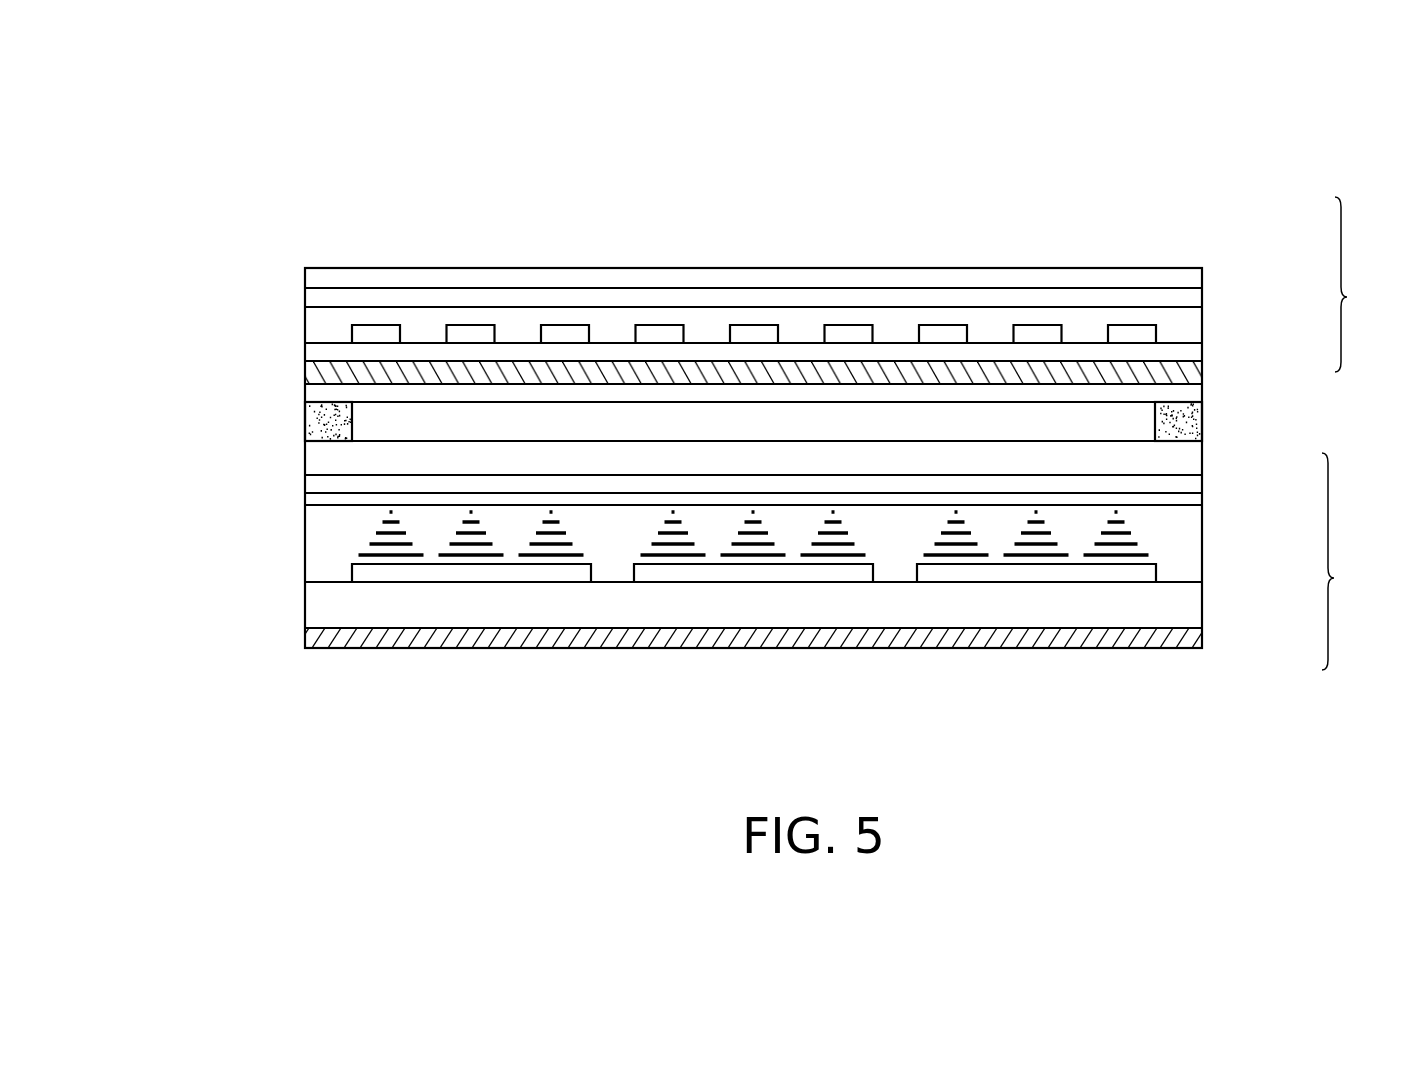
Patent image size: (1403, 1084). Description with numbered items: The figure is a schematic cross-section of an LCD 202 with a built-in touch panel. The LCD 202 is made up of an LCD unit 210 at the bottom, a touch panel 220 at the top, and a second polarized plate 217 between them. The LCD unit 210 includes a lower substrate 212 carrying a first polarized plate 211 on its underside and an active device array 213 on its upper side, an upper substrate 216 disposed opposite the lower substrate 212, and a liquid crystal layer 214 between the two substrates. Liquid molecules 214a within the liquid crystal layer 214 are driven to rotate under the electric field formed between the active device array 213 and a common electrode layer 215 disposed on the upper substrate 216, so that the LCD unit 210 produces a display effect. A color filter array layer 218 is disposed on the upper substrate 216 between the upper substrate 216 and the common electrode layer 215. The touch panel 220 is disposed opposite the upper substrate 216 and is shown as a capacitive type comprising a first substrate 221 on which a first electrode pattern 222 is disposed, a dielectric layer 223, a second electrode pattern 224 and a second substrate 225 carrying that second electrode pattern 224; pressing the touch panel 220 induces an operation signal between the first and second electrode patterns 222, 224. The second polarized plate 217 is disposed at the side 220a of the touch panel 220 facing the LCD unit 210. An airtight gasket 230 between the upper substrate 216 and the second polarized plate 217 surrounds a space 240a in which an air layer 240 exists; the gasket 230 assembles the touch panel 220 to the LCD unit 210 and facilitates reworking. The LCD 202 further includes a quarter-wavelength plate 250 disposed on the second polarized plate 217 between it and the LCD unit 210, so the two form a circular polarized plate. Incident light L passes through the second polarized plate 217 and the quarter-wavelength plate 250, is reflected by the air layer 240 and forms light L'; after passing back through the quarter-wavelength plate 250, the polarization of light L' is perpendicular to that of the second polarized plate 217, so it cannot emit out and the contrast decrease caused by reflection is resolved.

The LCD with a built-in touch panel 202 is at (1197, 702).
The LCD unit 210 is at (1353, 561).
The first polarized plate 211 is at (1197, 640).
The lower substrate 212 is at (1187, 607).
The active device array 213 is at (1160, 572).
The liquid crystal layer 214 is at (1152, 540).
The liquid molecules 214a is at (940, 539).
The common electrode layer 215 is at (1193, 499).
The upper substrate 216 is at (1183, 465).
The second polarized plate 217 is at (1088, 375).
The color filter array layer 218 is at (307, 486).
The touch panel 220 is at (1366, 284).
The side of the touch panel 220a is at (323, 378).
The first substrate 221 is at (1197, 356).
The first electrode pattern 222 is at (1148, 334).
The dielectric layer 223 is at (1197, 320).
The second electrode pattern 224 is at (1197, 298).
The second substrate 225 is at (1197, 277).
The airtight gasket 230 is at (1187, 418).
The air layer 240 is at (613, 420).
The space 240a is at (541, 417).
The quarter-wavelength plate 250 is at (1197, 393).
The light L is at (782, 304).
The light L' is at (881, 324).